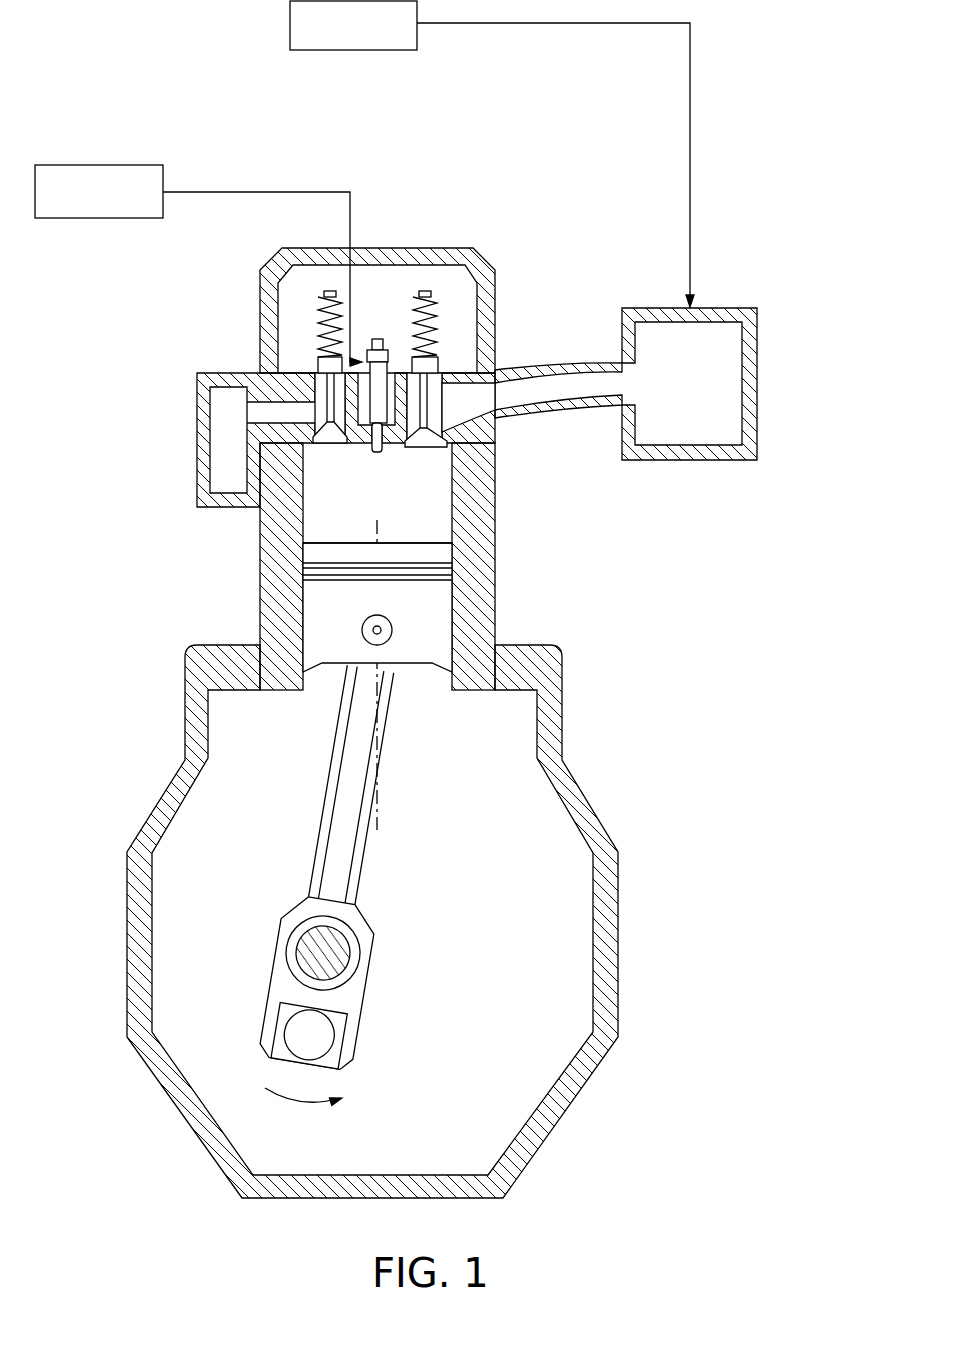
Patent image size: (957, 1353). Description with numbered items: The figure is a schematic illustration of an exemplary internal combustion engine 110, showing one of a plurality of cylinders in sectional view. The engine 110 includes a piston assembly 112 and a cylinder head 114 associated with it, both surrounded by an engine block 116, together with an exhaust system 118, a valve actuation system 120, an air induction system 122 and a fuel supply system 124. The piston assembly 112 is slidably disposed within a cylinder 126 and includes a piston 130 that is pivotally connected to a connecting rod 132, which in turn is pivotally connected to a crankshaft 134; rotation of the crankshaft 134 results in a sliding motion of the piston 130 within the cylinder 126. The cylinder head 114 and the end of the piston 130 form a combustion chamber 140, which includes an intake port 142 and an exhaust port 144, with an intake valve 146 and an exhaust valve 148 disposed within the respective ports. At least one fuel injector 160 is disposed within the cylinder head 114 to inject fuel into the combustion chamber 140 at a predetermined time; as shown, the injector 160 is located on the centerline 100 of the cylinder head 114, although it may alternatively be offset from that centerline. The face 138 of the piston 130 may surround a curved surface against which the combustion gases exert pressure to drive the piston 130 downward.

The centerline 100 is at (377, 808).
The internal combustion engine 110 is at (415, 697).
The piston assembly 112 is at (422, 708).
The cylinder head 114 is at (490, 428).
The engine block 116 is at (190, 722).
The exhaust system 118 is at (163, 427).
The valve actuation system 120 is at (330, 290).
The air induction system 122 is at (742, 172).
The fuel supply system 124 is at (272, 166).
The cylinder 126 is at (450, 510).
The piston 130 is at (440, 555).
The connecting rod 132 is at (338, 860).
The crankshaft 134 is at (318, 1037).
The face 138 is at (393, 542).
The combustion chamber 140 is at (318, 510).
The intake port 142 is at (437, 402).
The exhaust port 144 is at (318, 405).
The intake valve 146 is at (425, 448).
The exhaust valve 148 is at (327, 446).
The fuel injector 160 is at (378, 339).